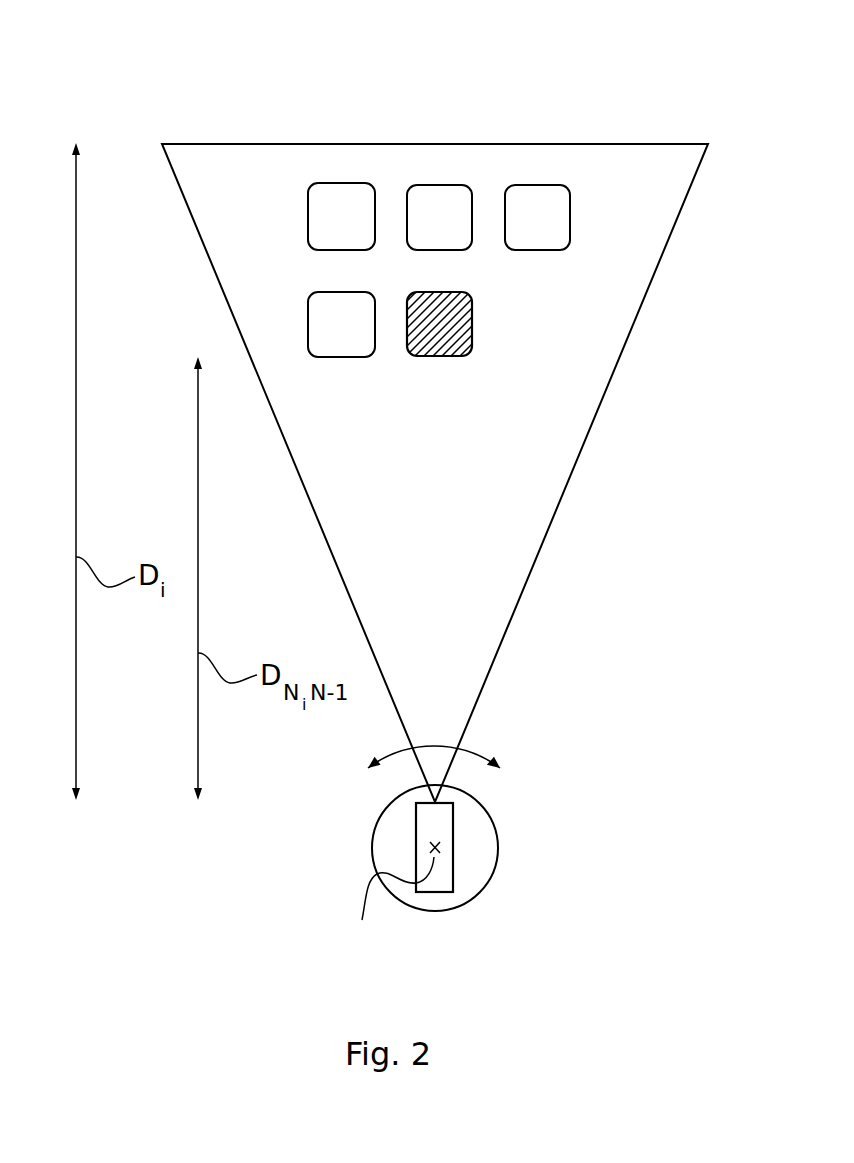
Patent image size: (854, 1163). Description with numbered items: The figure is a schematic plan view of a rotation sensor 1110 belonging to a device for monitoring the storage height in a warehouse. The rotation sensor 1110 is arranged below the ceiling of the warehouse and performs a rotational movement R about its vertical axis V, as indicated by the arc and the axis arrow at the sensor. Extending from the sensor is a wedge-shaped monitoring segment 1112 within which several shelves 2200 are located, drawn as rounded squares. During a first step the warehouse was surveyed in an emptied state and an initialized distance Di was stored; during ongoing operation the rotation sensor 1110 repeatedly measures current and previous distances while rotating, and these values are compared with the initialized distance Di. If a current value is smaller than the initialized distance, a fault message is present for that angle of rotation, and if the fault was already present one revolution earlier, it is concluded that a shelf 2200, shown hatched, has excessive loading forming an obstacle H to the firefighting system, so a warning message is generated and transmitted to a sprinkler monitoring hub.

The shelf 2200 is at (442, 202).
The monitoring segment 1112 is at (453, 545).
The rotation sensor 1110 is at (500, 868).